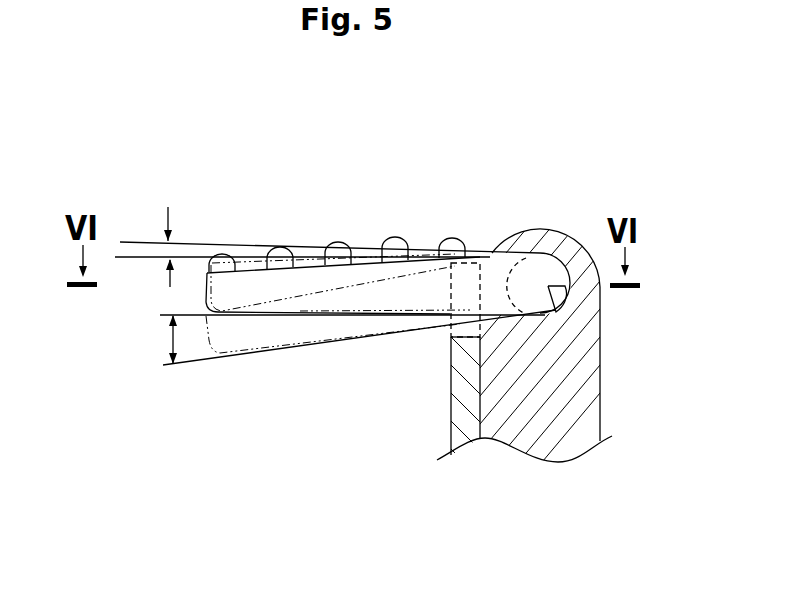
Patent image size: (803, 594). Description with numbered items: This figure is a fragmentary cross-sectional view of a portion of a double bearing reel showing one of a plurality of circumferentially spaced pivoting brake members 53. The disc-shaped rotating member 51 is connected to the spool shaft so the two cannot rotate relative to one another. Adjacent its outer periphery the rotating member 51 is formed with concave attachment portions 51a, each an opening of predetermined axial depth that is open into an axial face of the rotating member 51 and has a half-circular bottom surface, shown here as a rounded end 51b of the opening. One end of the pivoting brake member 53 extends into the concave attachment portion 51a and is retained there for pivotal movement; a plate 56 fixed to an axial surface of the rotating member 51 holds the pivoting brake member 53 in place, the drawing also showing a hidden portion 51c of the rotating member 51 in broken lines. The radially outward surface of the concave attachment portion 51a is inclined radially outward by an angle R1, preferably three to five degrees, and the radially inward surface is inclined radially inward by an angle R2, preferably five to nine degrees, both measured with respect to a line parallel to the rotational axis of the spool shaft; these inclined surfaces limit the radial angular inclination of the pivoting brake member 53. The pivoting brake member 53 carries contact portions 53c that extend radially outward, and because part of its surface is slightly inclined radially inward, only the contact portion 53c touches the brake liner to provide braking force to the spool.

The rotating member 51 is at (575, 397).
The concave attachment portion 51a is at (558, 300).
The rounded slot end 51b is at (512, 265).
The engaging hole 51c is at (498, 337).
The pivoting brake member 53 is at (318, 318).
The contact portion 53c is at (453, 240).
The plate 56 is at (457, 410).
The angle R1 is at (157, 245).
The angle R2 is at (173, 338).